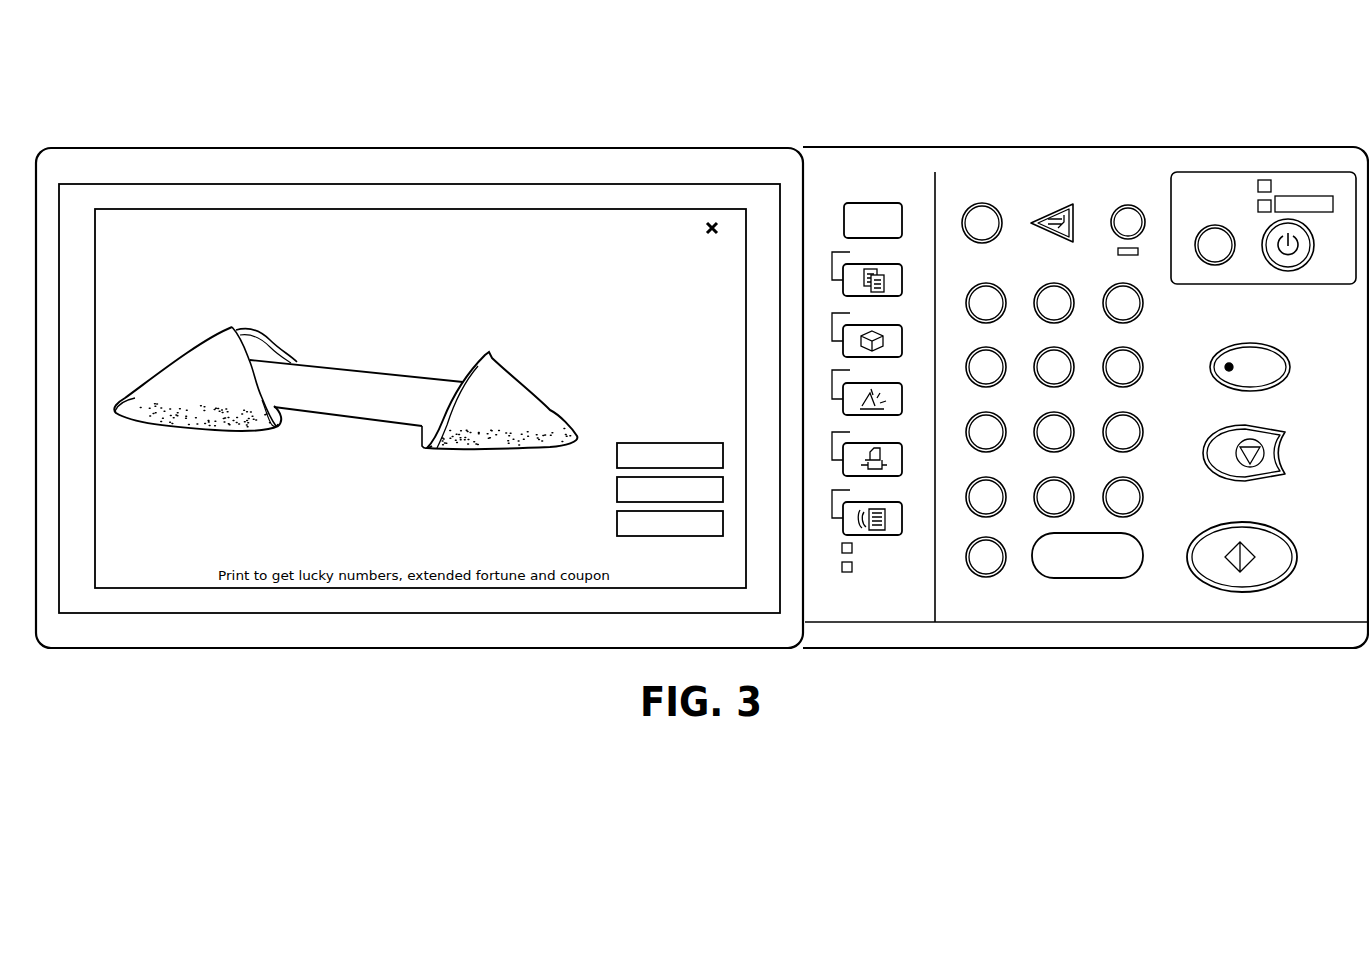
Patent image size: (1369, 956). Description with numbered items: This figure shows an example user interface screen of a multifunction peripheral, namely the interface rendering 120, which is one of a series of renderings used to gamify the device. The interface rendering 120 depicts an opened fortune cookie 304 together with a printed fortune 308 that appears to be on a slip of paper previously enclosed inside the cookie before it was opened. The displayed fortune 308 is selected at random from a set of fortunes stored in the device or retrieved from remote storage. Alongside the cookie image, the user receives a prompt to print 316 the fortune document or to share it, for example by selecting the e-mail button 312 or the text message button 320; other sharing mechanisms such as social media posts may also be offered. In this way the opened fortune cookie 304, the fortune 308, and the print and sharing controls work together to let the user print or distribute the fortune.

The interface rendering 120 is at (1178, 131).
The opened fortune cookie 304 is at (515, 383).
The printed fortune 308 is at (392, 381).
The e-mail button 312 is at (723, 452).
The prompt to print 316 is at (617, 518).
The text message button 320 is at (617, 480).